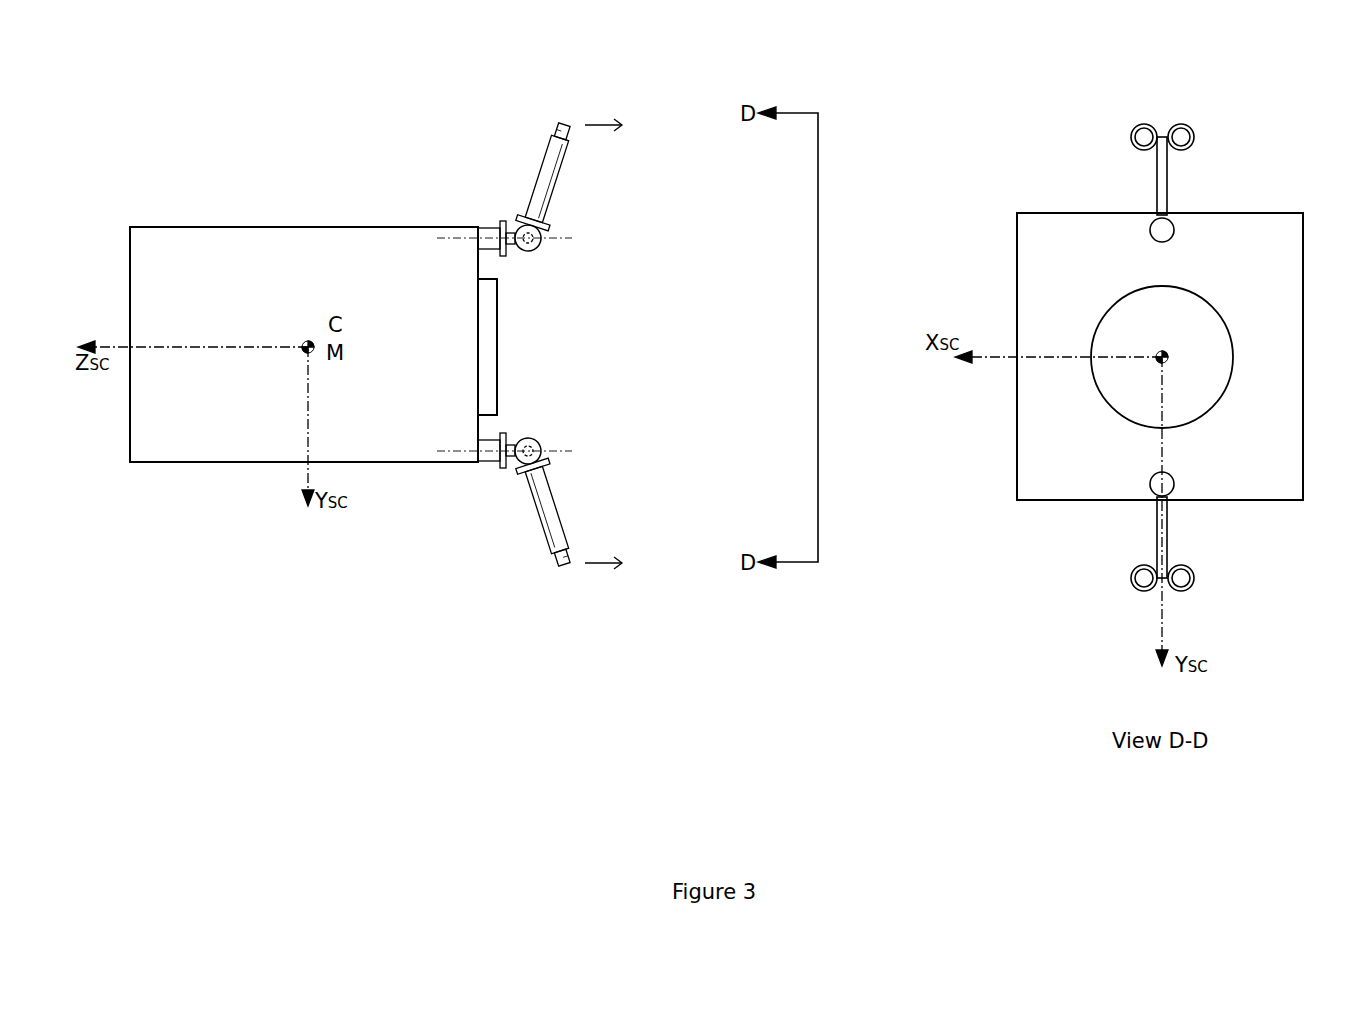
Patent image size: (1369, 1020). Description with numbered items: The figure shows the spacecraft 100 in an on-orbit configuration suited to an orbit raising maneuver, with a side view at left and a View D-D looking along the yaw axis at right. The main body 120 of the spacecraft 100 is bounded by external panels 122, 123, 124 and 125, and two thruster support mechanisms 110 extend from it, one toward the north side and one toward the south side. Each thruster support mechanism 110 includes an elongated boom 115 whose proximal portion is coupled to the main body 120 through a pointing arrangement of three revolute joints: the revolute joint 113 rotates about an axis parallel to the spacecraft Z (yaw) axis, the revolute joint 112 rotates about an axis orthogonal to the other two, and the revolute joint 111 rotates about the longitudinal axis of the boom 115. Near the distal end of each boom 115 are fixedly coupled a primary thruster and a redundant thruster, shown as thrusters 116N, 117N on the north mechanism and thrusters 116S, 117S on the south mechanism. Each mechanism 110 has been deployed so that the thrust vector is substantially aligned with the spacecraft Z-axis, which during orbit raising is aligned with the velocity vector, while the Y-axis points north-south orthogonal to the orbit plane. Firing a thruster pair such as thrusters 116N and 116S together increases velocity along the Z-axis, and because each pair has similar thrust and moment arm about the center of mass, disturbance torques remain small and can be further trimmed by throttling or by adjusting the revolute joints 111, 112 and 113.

The spacecraft 100 is at (125, 62).
The thruster support mechanism 110 is at (844, 347).
The revolute joint 111 is at (569, 344).
The revolute joint 112 is at (530, 250).
The revolute joint 113 is at (490, 225).
The boom 115 is at (540, 178).
The primary thruster 116N is at (838, 145).
The redundant thruster 117N is at (1183, 122).
The primary thruster 116S is at (844, 558).
The redundant thruster 117S is at (1185, 592).
The main body 120 is at (270, 285).
The external panel 122 is at (287, 227).
The external panel 123 is at (1018, 414).
The external panel 124 is at (1080, 212).
The external panel 125 is at (1303, 410).